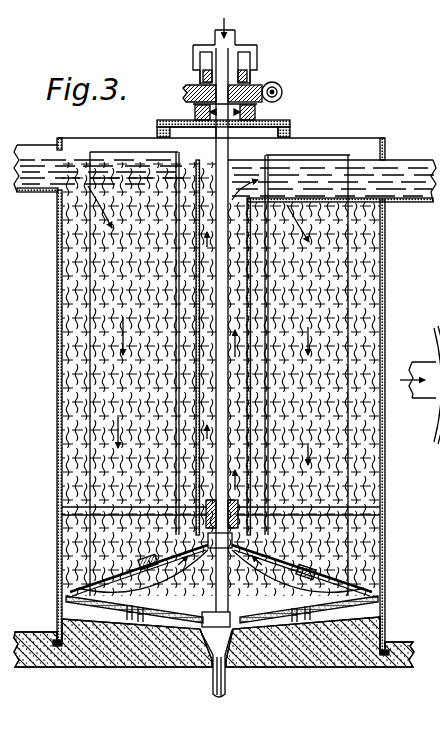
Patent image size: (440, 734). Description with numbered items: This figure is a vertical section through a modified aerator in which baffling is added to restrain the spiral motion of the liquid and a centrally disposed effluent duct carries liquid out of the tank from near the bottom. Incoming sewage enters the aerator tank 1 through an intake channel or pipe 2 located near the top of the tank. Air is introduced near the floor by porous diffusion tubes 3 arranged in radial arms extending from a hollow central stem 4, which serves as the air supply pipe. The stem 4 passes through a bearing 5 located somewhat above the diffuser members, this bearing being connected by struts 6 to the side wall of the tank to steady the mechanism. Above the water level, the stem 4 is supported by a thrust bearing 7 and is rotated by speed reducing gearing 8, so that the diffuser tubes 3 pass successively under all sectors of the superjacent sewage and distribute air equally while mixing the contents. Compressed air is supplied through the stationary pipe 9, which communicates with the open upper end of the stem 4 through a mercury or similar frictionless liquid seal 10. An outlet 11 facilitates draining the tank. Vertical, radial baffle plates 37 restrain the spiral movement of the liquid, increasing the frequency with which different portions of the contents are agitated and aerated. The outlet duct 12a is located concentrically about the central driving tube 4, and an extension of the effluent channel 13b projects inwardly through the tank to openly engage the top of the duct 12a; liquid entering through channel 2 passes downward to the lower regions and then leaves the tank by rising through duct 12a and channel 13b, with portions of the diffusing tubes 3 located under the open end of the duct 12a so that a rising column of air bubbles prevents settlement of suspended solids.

The aerator tank 1 is at (52, 320).
The intake channel or pipe 2 is at (42, 192).
The porous diffusion tubes 3 is at (152, 607).
The central stem 4 is at (222, 152).
The bearing 5 is at (232, 507).
The struts 6 is at (136, 513).
The thrust bearing 7 is at (262, 104).
The speed reducing gearing 8 is at (193, 90).
The stationary pipe 9 is at (238, 41).
The liquid seal 10 is at (259, 62).
The outlet 11 is at (226, 667).
The outlet duct 12a is at (248, 316).
The effluent channel 13b is at (332, 196).
The vertical radial baffle plates 37 is at (350, 283).